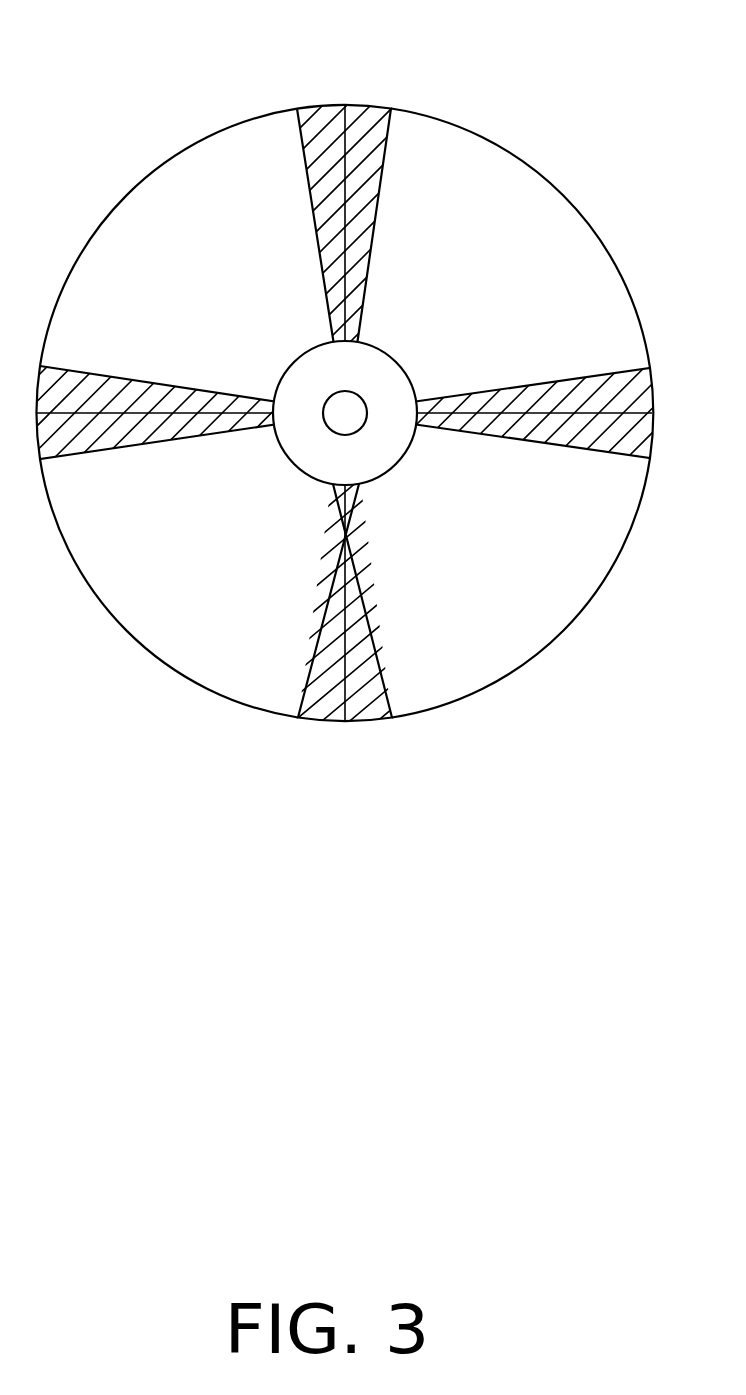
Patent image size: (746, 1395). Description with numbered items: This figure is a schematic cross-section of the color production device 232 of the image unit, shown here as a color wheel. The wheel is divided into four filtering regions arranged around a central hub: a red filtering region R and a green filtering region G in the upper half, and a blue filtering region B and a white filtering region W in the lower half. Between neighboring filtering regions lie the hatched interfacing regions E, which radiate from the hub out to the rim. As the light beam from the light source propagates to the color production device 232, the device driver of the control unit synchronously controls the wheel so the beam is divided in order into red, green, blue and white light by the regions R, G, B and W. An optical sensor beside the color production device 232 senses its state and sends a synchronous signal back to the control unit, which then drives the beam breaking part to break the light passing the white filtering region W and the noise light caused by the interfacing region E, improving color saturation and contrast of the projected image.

The color production device 232 is at (345, 433).
The interfacing region E is at (322, 107).
The green filtering region G is at (168, 237).
The red filtering region R is at (520, 239).
The blue filtering region B is at (521, 588).
The white filtering region W is at (169, 588).